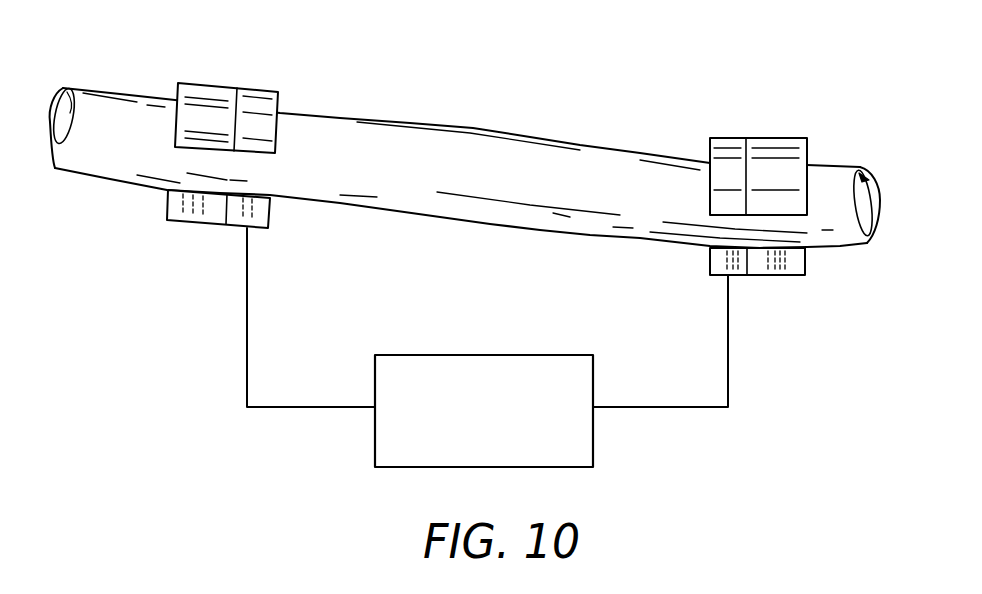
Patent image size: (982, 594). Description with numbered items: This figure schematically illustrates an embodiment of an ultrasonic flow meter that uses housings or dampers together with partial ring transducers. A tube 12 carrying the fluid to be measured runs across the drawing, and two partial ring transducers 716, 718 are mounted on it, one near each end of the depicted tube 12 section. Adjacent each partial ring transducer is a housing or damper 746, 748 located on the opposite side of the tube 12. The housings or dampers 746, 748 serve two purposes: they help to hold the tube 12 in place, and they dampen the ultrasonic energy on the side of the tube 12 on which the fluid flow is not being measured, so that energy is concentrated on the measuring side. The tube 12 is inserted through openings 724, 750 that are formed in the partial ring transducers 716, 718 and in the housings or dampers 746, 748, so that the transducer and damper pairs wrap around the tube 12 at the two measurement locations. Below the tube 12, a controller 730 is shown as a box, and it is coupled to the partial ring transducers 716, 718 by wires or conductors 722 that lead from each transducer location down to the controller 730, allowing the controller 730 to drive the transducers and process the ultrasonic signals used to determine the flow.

The tube 12 is at (600, 155).
The partial ring transducer 716 is at (725, 138).
The partial ring transducer 718 is at (265, 88).
The wires or conductors 722 is at (247, 346).
The opening 724 is at (270, 177).
The controller 730 is at (593, 438).
The housing or damper 746 is at (785, 275).
The housing or damper 748 is at (188, 220).
The opening 750 is at (170, 166).